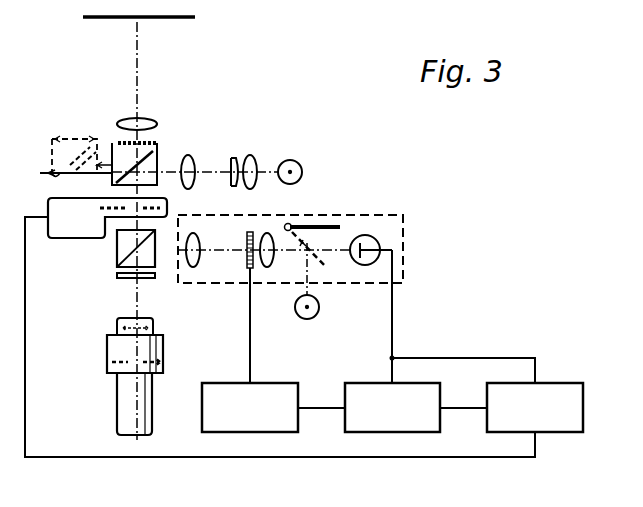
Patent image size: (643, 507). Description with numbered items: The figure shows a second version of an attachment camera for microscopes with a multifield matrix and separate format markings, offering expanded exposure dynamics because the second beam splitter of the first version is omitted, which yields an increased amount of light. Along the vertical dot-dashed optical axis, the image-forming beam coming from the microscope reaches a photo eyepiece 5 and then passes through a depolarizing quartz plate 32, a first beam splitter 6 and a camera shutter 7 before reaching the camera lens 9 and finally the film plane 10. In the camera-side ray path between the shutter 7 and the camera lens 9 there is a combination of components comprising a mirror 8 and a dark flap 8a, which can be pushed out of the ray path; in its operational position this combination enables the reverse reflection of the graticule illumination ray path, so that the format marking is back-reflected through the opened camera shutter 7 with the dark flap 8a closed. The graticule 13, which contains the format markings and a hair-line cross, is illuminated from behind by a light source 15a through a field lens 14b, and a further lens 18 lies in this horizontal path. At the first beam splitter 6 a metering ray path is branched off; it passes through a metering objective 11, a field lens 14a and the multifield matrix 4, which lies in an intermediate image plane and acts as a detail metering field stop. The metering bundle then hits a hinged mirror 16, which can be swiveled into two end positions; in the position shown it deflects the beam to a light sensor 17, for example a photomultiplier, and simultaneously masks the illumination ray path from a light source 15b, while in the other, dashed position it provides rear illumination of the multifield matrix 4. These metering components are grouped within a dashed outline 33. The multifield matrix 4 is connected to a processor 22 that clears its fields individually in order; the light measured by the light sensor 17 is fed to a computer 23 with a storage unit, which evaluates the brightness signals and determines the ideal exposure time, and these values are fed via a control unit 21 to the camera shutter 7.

The film plane 10 is at (98, 24).
The camera lens 9 is at (147, 119).
The mirror 8 is at (65, 176).
The dark flap 8a is at (124, 140).
The lens 18 is at (189, 156).
The graticule 13 is at (230, 158).
The field lens 14b is at (252, 157).
The light source 15a is at (320, 150).
The hinged mirror 16 is at (317, 224).
The detection unit 33 is at (391, 213).
The light sensor 17 is at (371, 236).
The metering objective 11 is at (196, 268).
The multifield matrix 4 is at (247, 262).
The field lens 14a is at (268, 258).
The light source 15b is at (317, 313).
The camera shutter 7 is at (76, 225).
The first beam splitter 6 is at (119, 245).
The depolarizing quartz plate 32 is at (126, 279).
The photo eyepiece 5 is at (118, 352).
The processor 22 is at (262, 420).
The computer 23 is at (405, 420).
The control unit 21 is at (548, 420).